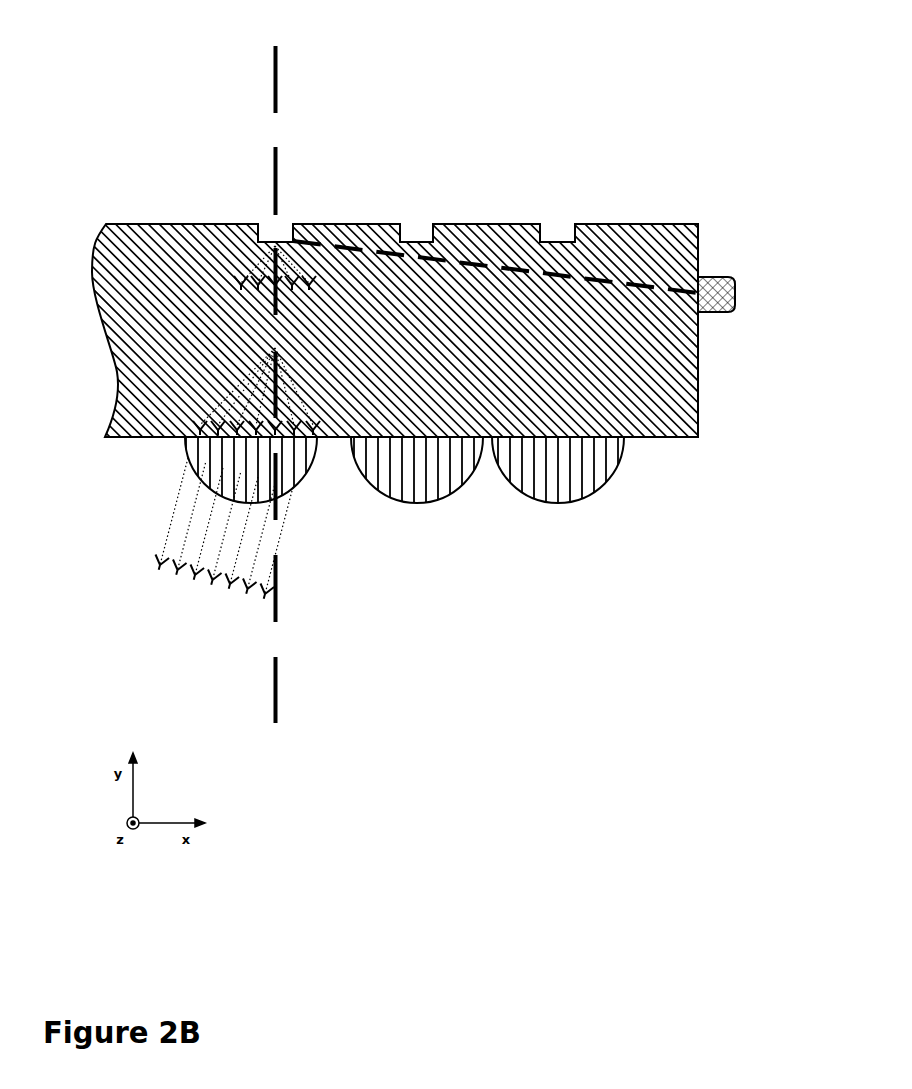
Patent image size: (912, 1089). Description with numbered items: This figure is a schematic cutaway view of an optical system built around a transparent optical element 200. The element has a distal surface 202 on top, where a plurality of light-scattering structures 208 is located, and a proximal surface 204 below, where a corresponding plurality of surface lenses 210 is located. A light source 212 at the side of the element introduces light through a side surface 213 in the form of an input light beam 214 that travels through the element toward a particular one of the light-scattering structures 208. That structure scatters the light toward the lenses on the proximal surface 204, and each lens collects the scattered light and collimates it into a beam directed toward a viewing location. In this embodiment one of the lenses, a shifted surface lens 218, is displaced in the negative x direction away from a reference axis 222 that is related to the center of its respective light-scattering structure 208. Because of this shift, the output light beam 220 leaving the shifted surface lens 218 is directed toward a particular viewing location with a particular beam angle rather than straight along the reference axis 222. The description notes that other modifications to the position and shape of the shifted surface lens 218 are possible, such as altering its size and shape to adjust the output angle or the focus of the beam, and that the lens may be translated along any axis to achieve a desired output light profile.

The transparent optical element 200 is at (503, 118).
The distal surface 202 is at (655, 224).
The proximal surface 204 is at (678, 438).
The light-scattering structures 208 is at (265, 222).
The surface lenses 210 is at (590, 498).
The light source 212 is at (710, 277).
The side surface 213 is at (700, 243).
The input light beam 214 is at (358, 224).
The shifted surface lens 218 is at (302, 478).
The output light beam 220 is at (176, 502).
The reference axis 222 is at (278, 680).